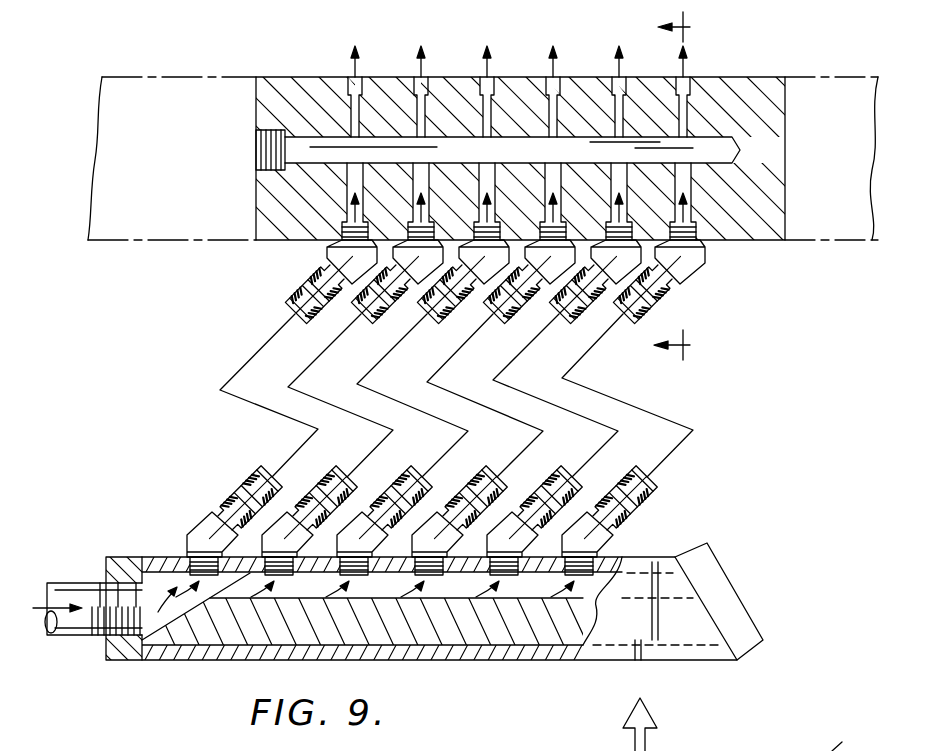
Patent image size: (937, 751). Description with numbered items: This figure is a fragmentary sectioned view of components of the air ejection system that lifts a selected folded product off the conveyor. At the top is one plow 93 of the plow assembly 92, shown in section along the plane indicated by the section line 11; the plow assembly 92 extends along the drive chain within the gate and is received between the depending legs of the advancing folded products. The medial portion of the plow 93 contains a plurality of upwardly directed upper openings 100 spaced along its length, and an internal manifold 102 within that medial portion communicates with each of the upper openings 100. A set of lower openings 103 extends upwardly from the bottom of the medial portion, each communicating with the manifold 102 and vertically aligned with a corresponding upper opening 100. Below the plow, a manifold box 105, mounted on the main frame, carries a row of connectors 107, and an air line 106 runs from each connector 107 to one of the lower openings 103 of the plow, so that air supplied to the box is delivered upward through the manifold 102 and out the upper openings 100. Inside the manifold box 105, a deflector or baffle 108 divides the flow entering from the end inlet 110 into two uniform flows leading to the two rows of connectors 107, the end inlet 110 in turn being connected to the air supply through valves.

The section line 11- 11 is at (695, 189).
The plow assembly 92 is at (178, 250).
The plow 93 is at (283, 82).
The upper openings 100 is at (550, 100).
The internal manifold 102 is at (300, 157).
The lower openings 103 is at (352, 197).
The manifold box 105 is at (472, 664).
The air line 106 is at (300, 297).
The connectors 107 is at (200, 513).
The deflector or baffle 108 is at (207, 628).
The end inlet 110 is at (135, 592).